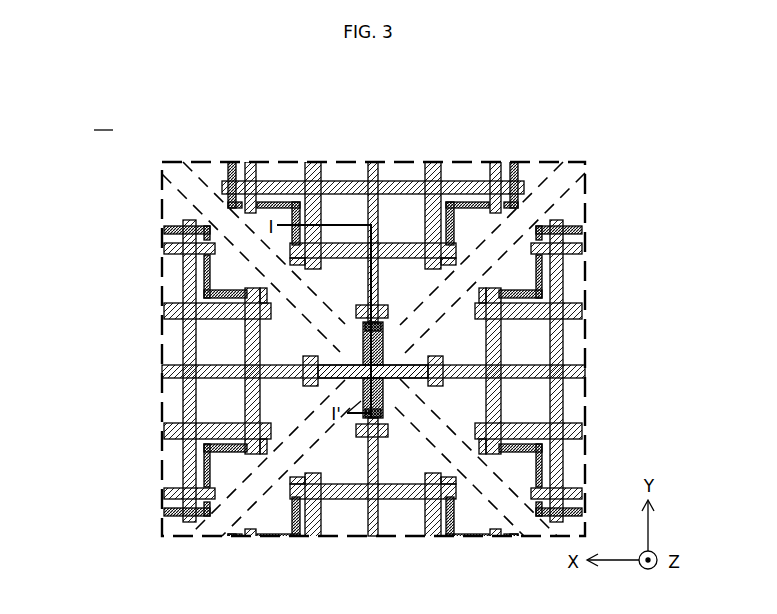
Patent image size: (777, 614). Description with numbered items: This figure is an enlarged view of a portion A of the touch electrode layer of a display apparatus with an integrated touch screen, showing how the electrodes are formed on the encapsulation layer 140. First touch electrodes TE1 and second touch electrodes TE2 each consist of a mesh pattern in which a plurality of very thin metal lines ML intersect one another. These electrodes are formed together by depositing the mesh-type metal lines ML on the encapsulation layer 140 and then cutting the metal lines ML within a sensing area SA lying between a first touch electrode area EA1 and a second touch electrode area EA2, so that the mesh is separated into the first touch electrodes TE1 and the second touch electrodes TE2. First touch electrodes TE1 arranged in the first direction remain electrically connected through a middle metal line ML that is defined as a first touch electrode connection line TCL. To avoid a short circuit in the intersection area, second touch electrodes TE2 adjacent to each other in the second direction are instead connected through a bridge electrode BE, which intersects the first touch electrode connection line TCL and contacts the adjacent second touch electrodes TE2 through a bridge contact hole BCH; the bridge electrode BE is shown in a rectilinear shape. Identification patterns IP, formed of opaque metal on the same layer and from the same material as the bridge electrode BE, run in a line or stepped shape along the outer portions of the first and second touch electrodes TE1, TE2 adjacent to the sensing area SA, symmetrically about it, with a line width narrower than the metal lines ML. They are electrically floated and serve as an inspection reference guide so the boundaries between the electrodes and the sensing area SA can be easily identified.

The encapsulation layer 140 is at (583, 170).
The portion A is at (103, 121).
The sensing area SA is at (200, 197).
The first touch electrode area EA1 is at (561, 176).
The second touch electrode area EA2 is at (566, 201).
The first touch electrode TE1 is at (177, 283).
The second touch electrode TE2 is at (339, 177).
The identification pattern IP is at (232, 170).
The metal line ML is at (432, 176).
The first touch electrode connection line TCL is at (352, 377).
The bridge electrode BE is at (385, 389).
The bridge contact hole BCH is at (384, 325).